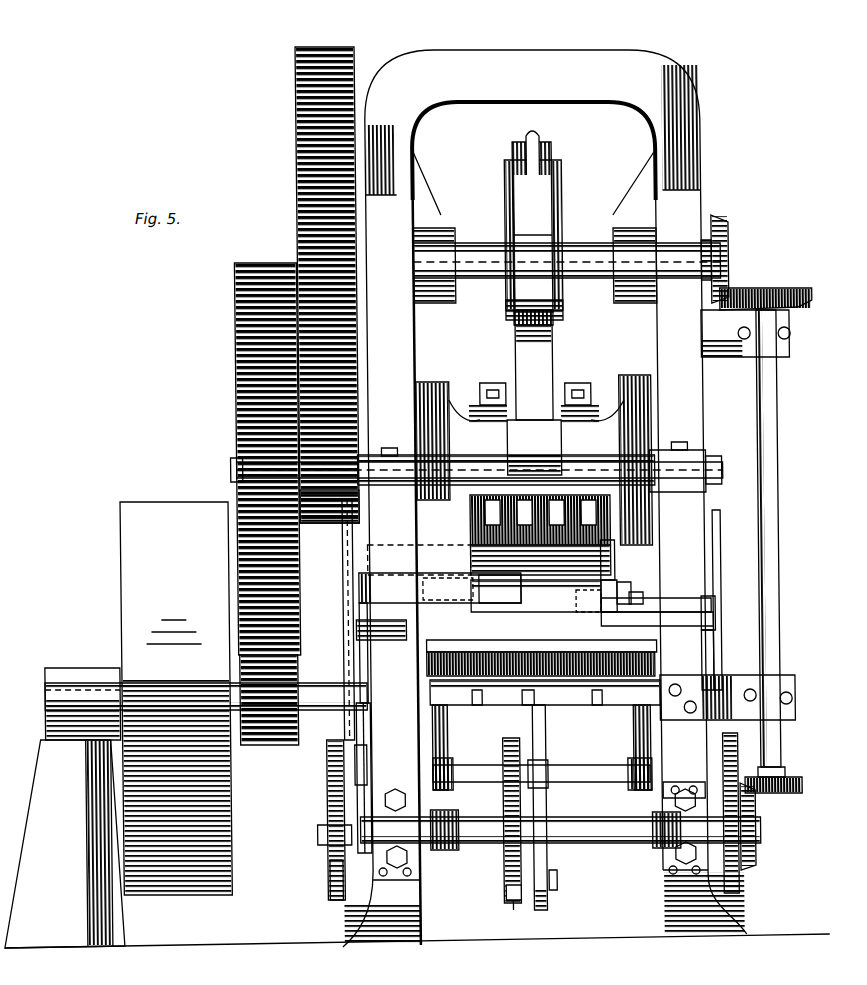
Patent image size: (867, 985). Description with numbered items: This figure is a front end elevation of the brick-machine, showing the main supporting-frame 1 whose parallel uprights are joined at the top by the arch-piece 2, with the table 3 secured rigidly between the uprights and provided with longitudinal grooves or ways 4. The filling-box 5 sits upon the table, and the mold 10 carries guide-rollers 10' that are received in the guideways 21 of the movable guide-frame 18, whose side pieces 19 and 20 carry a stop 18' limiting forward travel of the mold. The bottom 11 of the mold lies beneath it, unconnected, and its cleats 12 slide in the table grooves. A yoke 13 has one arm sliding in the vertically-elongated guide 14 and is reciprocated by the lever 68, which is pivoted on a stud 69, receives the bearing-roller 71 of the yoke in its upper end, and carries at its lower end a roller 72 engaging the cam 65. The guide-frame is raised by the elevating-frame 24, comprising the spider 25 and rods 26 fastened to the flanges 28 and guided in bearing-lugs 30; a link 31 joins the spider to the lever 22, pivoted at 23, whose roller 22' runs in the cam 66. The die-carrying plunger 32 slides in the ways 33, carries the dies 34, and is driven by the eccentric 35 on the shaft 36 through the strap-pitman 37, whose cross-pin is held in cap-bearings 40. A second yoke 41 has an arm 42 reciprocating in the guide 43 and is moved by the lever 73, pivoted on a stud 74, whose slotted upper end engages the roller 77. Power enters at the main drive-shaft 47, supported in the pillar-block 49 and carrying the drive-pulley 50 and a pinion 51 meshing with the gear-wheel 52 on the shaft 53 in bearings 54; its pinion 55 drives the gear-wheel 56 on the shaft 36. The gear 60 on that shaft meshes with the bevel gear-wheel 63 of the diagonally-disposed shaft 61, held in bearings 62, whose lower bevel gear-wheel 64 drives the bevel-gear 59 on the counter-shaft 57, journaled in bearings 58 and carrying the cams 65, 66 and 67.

The main supporting-frame 1 is at (416, 335).
The arch-piece 2 is at (523, 95).
The table 3 is at (556, 705).
The longitudinal grooves or ways 4 is at (472, 705).
The filling-box 5 is at (580, 540).
The mold 10 is at (536, 593).
The guide-rollers 10' is at (585, 599).
The bottom of the mold 11 is at (528, 705).
The longitudinal cleats 12 is at (496, 705).
The yoke 13 is at (440, 588).
The vertically-elongated guide 14 is at (358, 606).
The movable guide-frame 18 is at (621, 581).
The stop 18' is at (618, 558).
The side piece 19 is at (455, 580).
The side piece 20 is at (630, 596).
The guideways 21 is at (620, 585).
The lever 22 is at (497, 899).
The laterally-projecting roller 22' is at (504, 939).
The pivot 23 is at (553, 882).
The elevating-frame 24 is at (567, 778).
The spider 25 is at (489, 782).
The rods 26 is at (441, 758).
The flanges 28 is at (446, 588).
The bearing-lugs 30 is at (355, 630).
The link 31 is at (543, 857).
The die-carrying plunger 32 is at (562, 440).
The ways 33 is at (416, 410).
The dies 34 is at (498, 508).
The eccentric 35 is at (548, 192).
The shaft 36 is at (592, 268).
The strap-pitman 37 is at (555, 345).
The cap-bearings 40 is at (493, 383).
The yoke 41 is at (668, 612).
The arm 42 is at (714, 612).
The guide 43 is at (712, 604).
The main drive-shaft 47 is at (312, 712).
The pillar-block 49 is at (73, 678).
The drive-pulley 50 is at (128, 573).
The pinion 51 is at (270, 745).
The gear-wheel 52 is at (251, 399).
The shaft 53 is at (233, 470).
The bearings 54 is at (384, 455).
The pinion 55 is at (326, 505).
The gear-wheel 56 is at (302, 165).
The counter-shaft 57 is at (613, 843).
The bearings 58 is at (442, 850).
The bevel-gear 59 is at (753, 840).
The gear 60 is at (733, 240).
The diagonally-disposed shaft 61 is at (778, 512).
The bearings 62 is at (775, 347).
The bevel gear-wheel 63 is at (762, 288).
The bevel gear-wheel 64 is at (780, 793).
The cam 65 is at (326, 866).
The cam 66 is at (500, 865).
The cam 67 is at (735, 884).
The lever 68 is at (356, 745).
The stud 69 is at (324, 798).
The bearing-roller 71 is at (342, 588).
The laterally-projecting roller 72 is at (314, 836).
The lever 73 is at (716, 560).
The stud 74 is at (700, 788).
The roller 77 is at (722, 612).